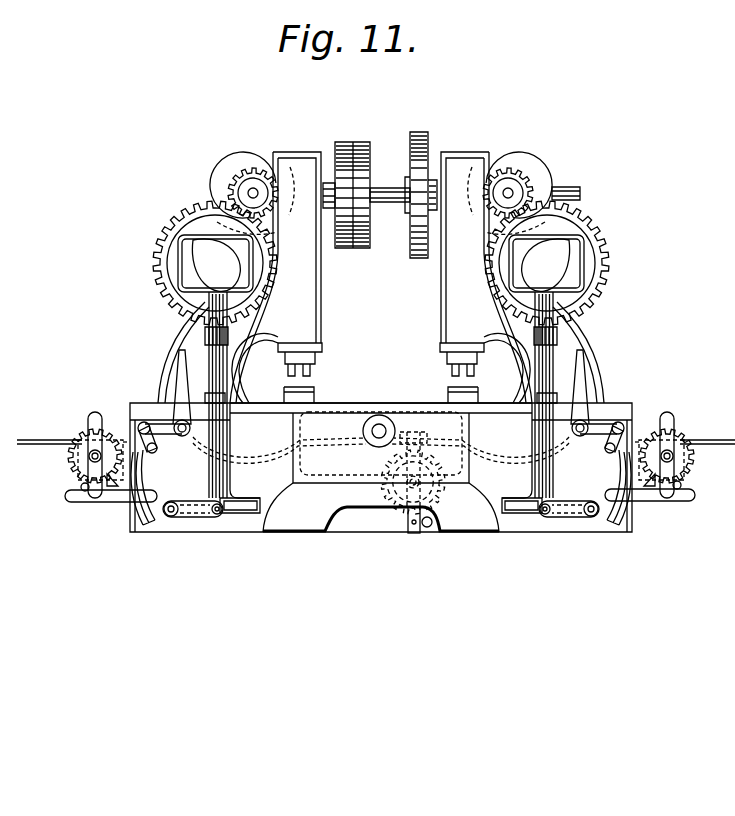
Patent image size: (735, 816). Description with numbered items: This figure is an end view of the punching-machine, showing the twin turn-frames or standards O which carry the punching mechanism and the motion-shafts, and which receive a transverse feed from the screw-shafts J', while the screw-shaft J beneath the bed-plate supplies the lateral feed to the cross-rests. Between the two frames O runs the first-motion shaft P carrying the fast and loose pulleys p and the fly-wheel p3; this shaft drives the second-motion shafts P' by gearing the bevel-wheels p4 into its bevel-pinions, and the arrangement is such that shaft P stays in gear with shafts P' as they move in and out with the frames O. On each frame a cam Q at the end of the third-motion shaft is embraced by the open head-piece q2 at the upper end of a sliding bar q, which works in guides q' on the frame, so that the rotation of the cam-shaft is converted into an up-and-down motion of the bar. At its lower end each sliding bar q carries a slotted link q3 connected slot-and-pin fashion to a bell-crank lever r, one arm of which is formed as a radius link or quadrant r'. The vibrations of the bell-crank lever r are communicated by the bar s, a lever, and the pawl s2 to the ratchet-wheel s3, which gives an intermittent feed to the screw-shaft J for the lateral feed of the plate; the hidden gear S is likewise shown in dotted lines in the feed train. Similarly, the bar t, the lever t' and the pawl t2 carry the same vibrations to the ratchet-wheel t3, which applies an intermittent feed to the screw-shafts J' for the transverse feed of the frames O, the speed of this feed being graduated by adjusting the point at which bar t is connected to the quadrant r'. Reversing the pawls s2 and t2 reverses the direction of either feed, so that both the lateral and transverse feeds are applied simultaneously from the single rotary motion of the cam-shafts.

The screw-shaft J is at (381, 467).
The screw-shafts J' is at (377, 443).
The turn-frames or standards O is at (381, 277).
The first-motion shaft P is at (319, 163).
The second-motion shafts P' is at (508, 160).
The fast and loose pulleys p is at (229, 172).
The fly-wheel p3 is at (422, 133).
The bevel-wheels p4 is at (536, 163).
The cam Q is at (381, 263).
The sliding bars q is at (381, 368).
The guides q' is at (381, 381).
The open head-piece q2 is at (614, 298).
The slotted link q3 is at (526, 514).
The bell-crank lever r is at (381, 532).
The radius link or quadrant r' is at (381, 473).
The bar s is at (510, 449).
The gear S is at (400, 466).
The pawl s2 is at (430, 527).
The ratchet-wheel s3 is at (407, 513).
The bar t is at (380, 513).
The lever t' is at (390, 441).
The pawl t2 is at (702, 487).
The ratchet-wheel t3 is at (702, 462).